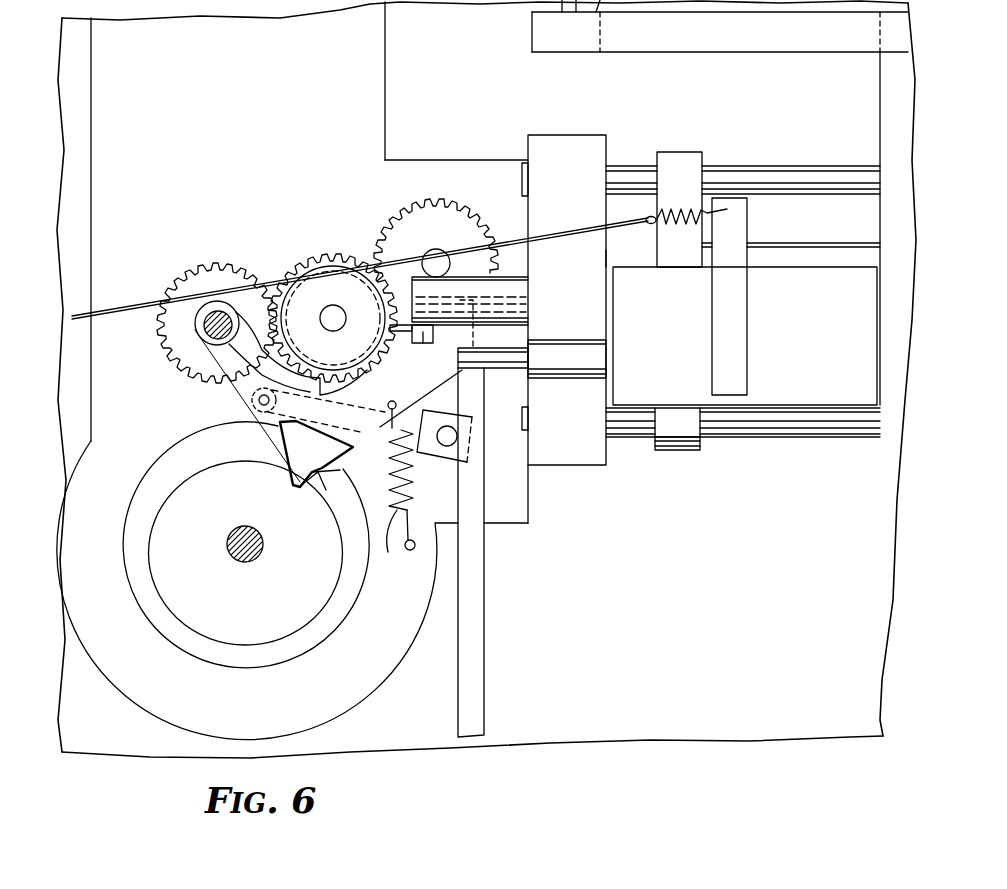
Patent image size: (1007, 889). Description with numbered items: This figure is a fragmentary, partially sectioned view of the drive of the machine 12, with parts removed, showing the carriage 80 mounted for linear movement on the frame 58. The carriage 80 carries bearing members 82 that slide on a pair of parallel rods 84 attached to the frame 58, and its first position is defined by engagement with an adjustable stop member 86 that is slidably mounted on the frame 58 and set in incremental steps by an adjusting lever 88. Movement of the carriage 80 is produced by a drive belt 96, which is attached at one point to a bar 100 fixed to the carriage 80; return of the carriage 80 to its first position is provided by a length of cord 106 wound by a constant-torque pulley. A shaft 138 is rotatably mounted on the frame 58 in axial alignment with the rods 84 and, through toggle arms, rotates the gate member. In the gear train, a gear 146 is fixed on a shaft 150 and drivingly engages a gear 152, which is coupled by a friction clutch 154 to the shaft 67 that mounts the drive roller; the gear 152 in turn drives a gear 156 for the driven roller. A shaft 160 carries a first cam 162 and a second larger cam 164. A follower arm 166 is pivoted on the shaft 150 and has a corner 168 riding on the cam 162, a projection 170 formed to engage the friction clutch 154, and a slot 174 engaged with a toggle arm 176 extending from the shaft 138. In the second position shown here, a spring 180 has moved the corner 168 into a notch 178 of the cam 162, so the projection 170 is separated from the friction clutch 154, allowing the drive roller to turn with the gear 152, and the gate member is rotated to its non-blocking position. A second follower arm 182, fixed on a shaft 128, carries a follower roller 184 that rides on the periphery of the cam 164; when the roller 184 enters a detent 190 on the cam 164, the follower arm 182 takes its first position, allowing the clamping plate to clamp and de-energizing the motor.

The carriage assembly 12 is at (646, 142).
The frame 58 is at (742, 635).
The shaft 67 is at (333, 305).
The carriage 80 is at (838, 336).
The bearing members 82 is at (686, 152).
The rods 84 is at (830, 175).
The stop member 86 is at (607, 360).
The adjusting lever 88 is at (480, 679).
The belt 96 is at (749, 52).
The bar 100 is at (890, 87).
The cord 106 is at (115, 312).
The shaft 128 is at (447, 446).
The shaft 138 is at (513, 285).
The gear 146 is at (198, 265).
The shaft 150 is at (202, 334).
The gear 152 is at (302, 268).
The friction clutch 154 is at (298, 300).
The gear 156 is at (410, 208).
The shaft 160 is at (244, 564).
The first cam 162 is at (160, 538).
The second cam 164 is at (150, 477).
The follower arm 166 is at (427, 388).
The corner 168 is at (290, 478).
The projection 170 is at (283, 380).
The slot 174 is at (413, 343).
The toggle arm 176 is at (424, 344).
The notch 178 is at (307, 477).
The spring 180 is at (396, 545).
The follower arm 182 is at (360, 430).
The follower roller 184 is at (250, 402).
The detent 190 is at (298, 436).